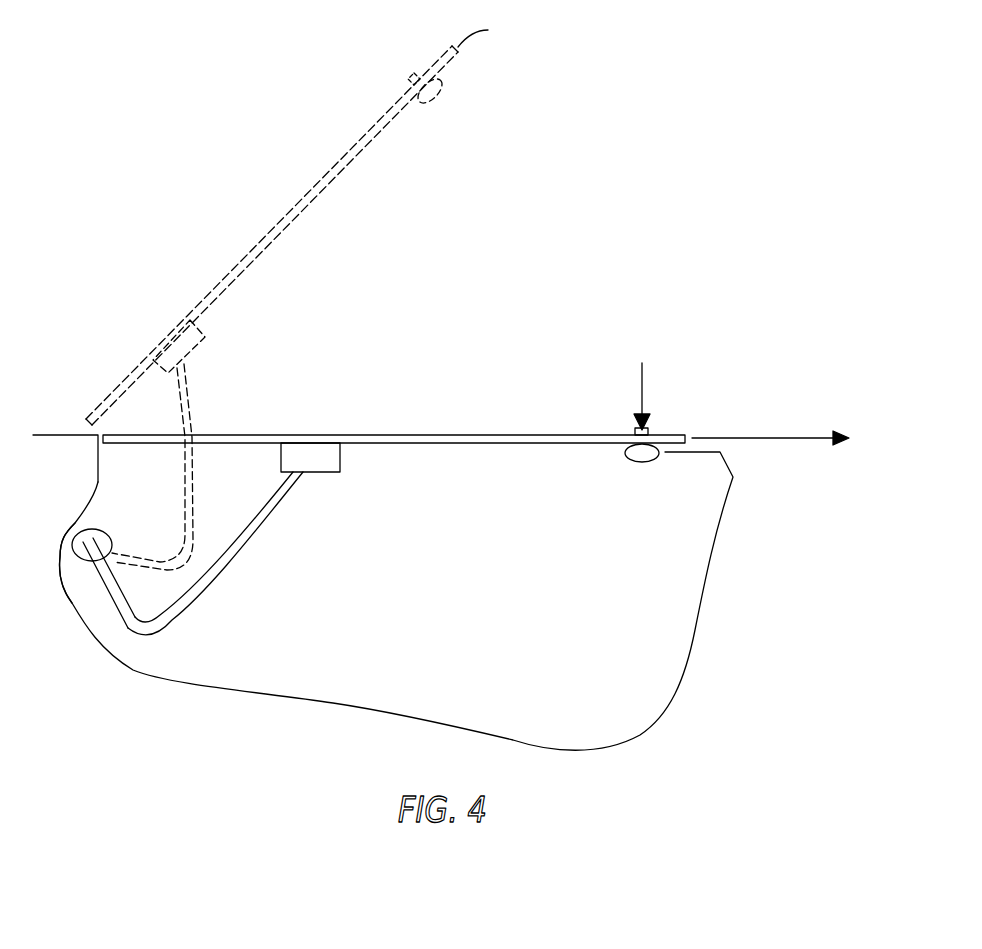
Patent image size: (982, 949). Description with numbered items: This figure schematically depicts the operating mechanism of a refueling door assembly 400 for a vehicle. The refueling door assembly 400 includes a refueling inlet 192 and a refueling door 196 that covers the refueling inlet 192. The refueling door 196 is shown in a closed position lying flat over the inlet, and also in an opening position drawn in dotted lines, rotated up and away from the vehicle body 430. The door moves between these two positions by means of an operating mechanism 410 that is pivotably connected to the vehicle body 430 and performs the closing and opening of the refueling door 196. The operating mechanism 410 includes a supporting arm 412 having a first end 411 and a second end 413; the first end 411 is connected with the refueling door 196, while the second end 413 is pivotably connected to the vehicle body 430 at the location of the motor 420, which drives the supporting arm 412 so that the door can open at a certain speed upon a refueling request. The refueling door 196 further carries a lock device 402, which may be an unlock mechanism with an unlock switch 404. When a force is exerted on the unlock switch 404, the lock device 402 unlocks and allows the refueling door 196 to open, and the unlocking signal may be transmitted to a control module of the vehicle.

The refueling door assembly 400 is at (697, 122).
The refueling door 196 is at (530, 435).
The refueling inlet 192 is at (675, 618).
The lock device 402 is at (629, 459).
The unlock switch 404 is at (648, 431).
The operating mechanism 410 is at (193, 477).
The first end 411 is at (305, 472).
The supporting arm 412 is at (260, 525).
The second end 413 is at (95, 585).
The motor 420 is at (100, 530).
The vehicle body 430 is at (57, 551).